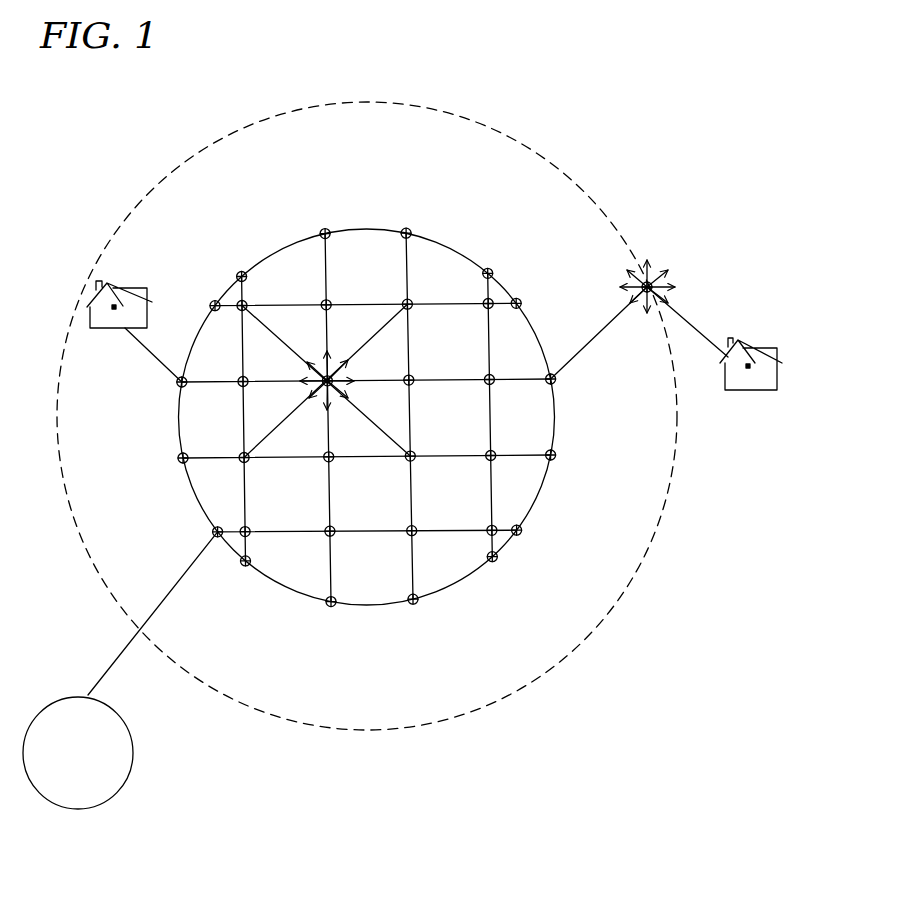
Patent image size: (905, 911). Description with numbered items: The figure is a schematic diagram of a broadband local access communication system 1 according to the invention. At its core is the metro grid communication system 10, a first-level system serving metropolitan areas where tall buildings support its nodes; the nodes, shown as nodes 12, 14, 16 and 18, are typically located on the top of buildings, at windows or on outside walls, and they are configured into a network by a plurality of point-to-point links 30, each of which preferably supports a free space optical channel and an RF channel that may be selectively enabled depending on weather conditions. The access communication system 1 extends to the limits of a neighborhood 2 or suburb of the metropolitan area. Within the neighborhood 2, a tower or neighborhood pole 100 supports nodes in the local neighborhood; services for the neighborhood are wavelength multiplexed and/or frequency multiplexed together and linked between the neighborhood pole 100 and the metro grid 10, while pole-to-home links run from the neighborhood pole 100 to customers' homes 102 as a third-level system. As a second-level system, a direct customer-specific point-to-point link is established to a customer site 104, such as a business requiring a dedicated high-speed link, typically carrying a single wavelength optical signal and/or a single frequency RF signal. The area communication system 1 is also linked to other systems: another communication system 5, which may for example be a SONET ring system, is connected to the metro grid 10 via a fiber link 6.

The access communication system 1 is at (137, 147).
The neighborhood 2 is at (672, 480).
The communication system 5 is at (100, 806).
The fiber link 6 is at (177, 580).
The metro grid communication system 10 is at (448, 251).
The node 12 is at (334, 366).
The node 14 is at (420, 377).
The node 16 is at (333, 463).
The node 18 is at (413, 459).
The point-to-point links 30 is at (286, 374).
The neighborhood pole 100 is at (652, 282).
The customers' homes 102 is at (757, 347).
The customer site 104 is at (137, 288).